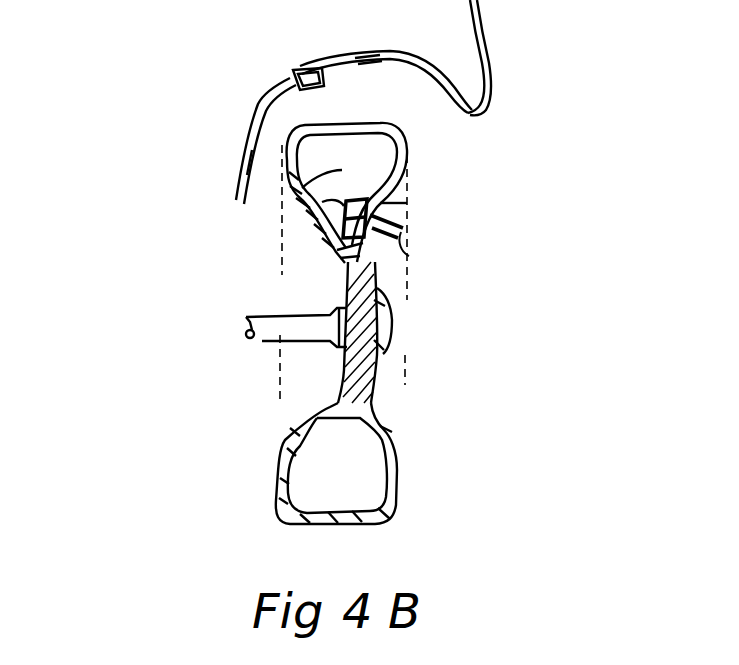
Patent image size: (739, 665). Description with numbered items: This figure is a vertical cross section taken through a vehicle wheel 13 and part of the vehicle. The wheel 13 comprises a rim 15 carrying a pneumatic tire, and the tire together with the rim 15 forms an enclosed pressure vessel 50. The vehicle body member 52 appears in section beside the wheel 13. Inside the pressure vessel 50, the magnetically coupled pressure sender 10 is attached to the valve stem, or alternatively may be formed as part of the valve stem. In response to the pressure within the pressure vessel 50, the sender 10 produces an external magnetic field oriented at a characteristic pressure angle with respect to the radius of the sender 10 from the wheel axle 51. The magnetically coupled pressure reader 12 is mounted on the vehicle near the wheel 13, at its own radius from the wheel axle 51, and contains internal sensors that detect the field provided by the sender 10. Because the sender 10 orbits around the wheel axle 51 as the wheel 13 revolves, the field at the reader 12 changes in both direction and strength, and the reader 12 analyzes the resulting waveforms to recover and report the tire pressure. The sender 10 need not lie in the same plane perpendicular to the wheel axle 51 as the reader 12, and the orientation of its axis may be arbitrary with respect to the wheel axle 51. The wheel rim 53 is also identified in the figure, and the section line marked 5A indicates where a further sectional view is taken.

The magnetic pressure reader 12 is at (292, 72).
The body member 52 is at (242, 150).
The wheel 13 is at (410, 150).
The pressure vessel 50 is at (300, 190).
The magnetic pressure sender 10 is at (400, 210).
The section line 5A is at (421, 248).
The rim 15 is at (408, 276).
The wheel axle 51 is at (236, 337).
The wheel rim 53 is at (385, 428).